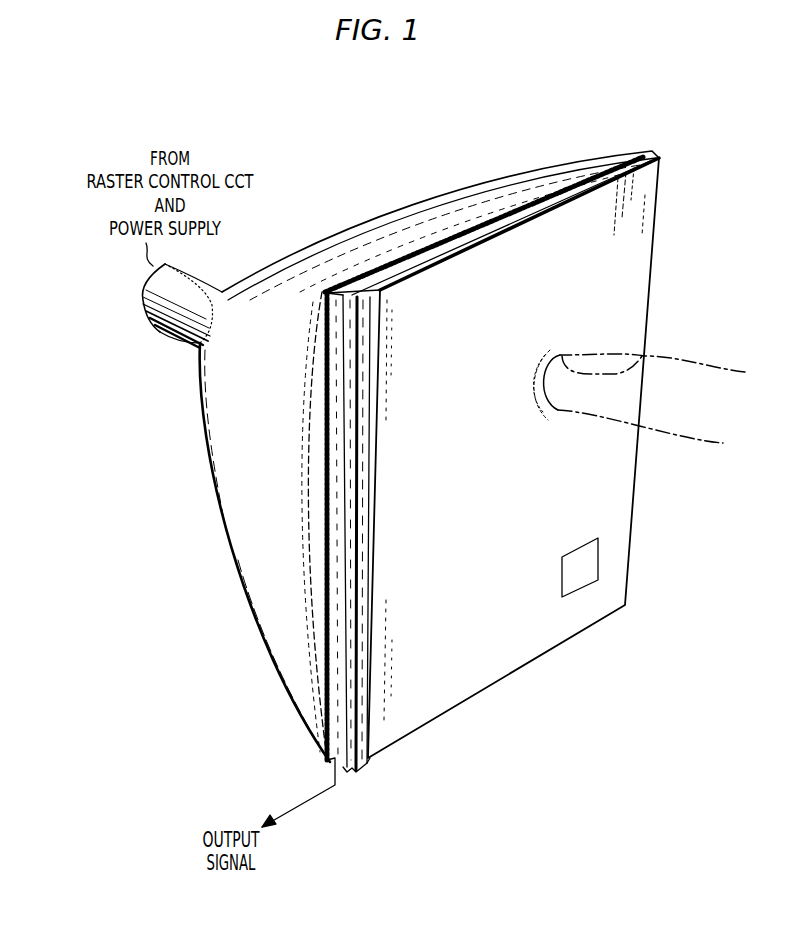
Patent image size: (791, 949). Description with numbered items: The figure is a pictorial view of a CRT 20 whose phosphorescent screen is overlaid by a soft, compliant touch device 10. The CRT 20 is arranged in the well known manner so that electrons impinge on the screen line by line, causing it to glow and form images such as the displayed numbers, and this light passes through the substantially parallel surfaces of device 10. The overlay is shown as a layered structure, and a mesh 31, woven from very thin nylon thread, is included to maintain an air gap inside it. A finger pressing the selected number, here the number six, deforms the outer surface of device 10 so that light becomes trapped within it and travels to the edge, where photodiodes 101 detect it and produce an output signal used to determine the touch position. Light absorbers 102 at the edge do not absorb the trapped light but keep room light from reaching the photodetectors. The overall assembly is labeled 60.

The display device 60 is at (437, 154).
The compliant device 10 is at (655, 160).
The CRT 20 is at (232, 492).
The mesh 31 is at (598, 172).
The photodiodes 101 is at (327, 762).
The light absorbers 102 is at (370, 758).